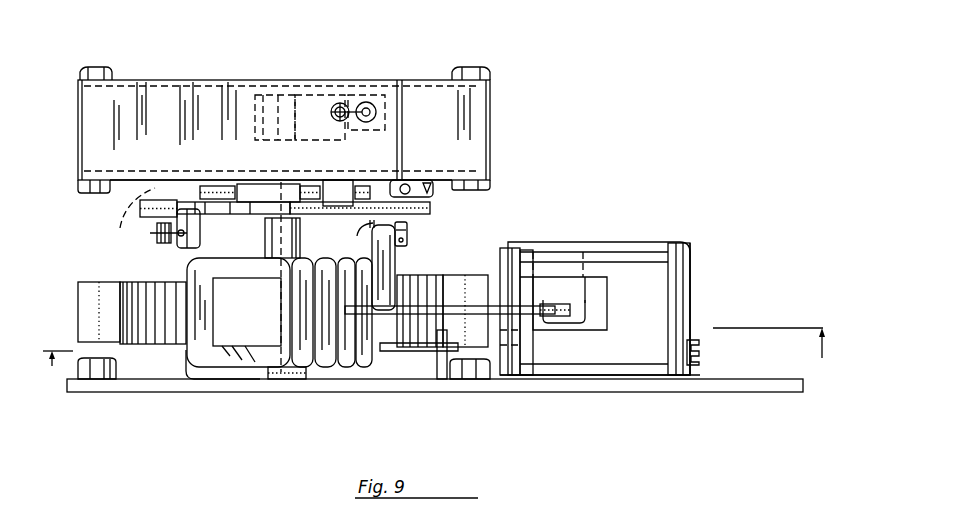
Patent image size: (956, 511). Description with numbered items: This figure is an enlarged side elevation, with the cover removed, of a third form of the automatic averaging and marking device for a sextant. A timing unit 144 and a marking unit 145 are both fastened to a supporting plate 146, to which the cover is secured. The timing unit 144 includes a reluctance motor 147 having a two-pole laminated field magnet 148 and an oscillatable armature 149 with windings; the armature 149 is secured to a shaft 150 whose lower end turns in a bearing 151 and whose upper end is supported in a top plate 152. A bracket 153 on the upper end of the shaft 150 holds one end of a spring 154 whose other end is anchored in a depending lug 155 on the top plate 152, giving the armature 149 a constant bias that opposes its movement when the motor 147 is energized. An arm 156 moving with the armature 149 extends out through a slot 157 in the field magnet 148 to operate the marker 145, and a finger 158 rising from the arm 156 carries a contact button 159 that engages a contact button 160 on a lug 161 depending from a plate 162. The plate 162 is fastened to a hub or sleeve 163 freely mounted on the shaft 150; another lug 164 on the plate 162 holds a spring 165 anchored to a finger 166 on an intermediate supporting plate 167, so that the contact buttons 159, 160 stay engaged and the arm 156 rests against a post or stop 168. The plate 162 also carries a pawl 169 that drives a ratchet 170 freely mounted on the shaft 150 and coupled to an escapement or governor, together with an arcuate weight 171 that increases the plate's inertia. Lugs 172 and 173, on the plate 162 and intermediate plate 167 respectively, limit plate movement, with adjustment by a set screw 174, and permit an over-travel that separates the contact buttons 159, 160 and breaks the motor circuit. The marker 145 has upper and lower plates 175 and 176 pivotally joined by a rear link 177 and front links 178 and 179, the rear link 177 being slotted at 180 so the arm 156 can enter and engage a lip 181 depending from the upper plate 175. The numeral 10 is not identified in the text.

The section line 10 is at (438, 355).
The timing unit 144 is at (524, 164).
The marking unit 145 is at (673, 207).
The supporting plate 146 is at (582, 392).
The reluctance motor 147 is at (163, 362).
The two-pole laminated field magnet 148 is at (437, 343).
The oscillatable armature 149 is at (245, 332).
The shaft 150 is at (277, 157).
The bearing 151 is at (293, 378).
The top plate 152 is at (233, 80).
The bracket 153 is at (255, 126).
The spring 154 is at (313, 117).
The depending lug 155 is at (400, 112).
The arm 156 is at (433, 313).
The slot 157 is at (475, 305).
The finger 158 is at (381, 270).
The contact button 159 is at (408, 238).
The contact button 160 is at (405, 234).
The lug 161 is at (377, 222).
The plate 162 is at (430, 208).
The hub or sleeve 163 is at (303, 232).
The lug 164 is at (202, 232).
The spring 165 is at (166, 243).
The finger 166 is at (133, 214).
The intermediate supporting plate 167 is at (110, 166).
The post or stop 168 is at (500, 186).
The pawl 169 is at (262, 184).
The ratchet 170 is at (233, 186).
The arcuate shaped weight 171 is at (190, 203).
The lug 172 is at (345, 186).
The lug 173 is at (428, 183).
The set screw 174 is at (405, 184).
The upper plate 175 is at (604, 242).
The lower plate 176 is at (633, 370).
The rear link 177 is at (652, 265).
The front link 178 is at (503, 281).
The front link 179 is at (690, 296).
The slot 180 is at (594, 280).
The lip 181 is at (607, 297).